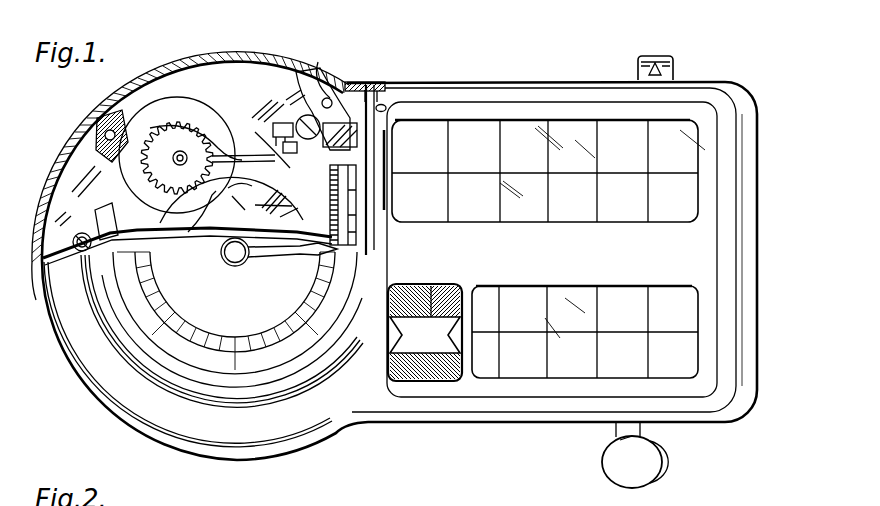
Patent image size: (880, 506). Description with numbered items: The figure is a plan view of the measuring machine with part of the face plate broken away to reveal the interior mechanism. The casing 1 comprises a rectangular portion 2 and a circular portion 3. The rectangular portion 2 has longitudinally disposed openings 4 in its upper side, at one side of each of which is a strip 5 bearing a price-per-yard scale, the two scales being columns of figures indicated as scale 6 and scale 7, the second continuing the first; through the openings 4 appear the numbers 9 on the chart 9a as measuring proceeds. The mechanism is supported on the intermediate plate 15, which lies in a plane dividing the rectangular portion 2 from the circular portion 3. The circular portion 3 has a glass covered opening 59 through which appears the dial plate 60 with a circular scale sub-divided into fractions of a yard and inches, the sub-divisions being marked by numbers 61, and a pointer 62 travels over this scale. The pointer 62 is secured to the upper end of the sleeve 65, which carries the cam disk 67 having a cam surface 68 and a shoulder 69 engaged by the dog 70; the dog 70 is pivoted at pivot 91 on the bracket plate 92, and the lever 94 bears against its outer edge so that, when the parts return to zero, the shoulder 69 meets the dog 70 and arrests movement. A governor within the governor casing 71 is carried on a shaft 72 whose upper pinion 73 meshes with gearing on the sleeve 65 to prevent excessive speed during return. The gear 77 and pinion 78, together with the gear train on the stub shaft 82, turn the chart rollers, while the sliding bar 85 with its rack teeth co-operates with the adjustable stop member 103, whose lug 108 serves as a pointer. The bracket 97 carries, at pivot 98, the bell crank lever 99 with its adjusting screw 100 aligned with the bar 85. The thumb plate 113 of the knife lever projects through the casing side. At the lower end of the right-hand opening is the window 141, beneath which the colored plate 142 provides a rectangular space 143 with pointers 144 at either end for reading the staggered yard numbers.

The casing 1 is at (354, 420).
The rectangular portion 2 is at (546, 422).
The circular portion 3 is at (213, 448).
The openings 4 is at (690, 192).
The strip 5 is at (474, 140).
The price-per-yard scale 6 is at (574, 140).
The price-per-yard scale 7 is at (625, 290).
The numbers 9 is at (672, 210).
The chart 9a is at (523, 187).
The intermediate plate 15 is at (386, 106).
The glass covered opening 59 is at (150, 358).
The dial plate 60 is at (263, 373).
The numbers 61 is at (222, 327).
The pointer 62 is at (250, 257).
The sleeve 65 is at (187, 215).
The cam disk 67 is at (231, 204).
The cam surface 68 is at (242, 196).
The shoulder 69 is at (276, 217).
The dog 70 is at (272, 152).
The governor casing 71 is at (197, 112).
The shaft 72 is at (177, 158).
The pinion 73 is at (198, 150).
The gear 77 is at (358, 225).
The pinion 78 is at (302, 246).
The stub shaft 82 is at (360, 215).
The bar 85 is at (320, 74).
The pivot 91 is at (292, 64).
The bracket plate 92 is at (346, 90).
The lever 94 is at (274, 202).
The bracket 97 is at (261, 107).
The pivot 98 is at (290, 94).
The bell crank lever 99 is at (280, 146).
The adjusting screw 100 is at (100, 112).
The adjustable stop member 103 is at (672, 56).
The lug 108 is at (640, 72).
The thumb plate 113 is at (656, 477).
The window 141 is at (441, 380).
The colored plate 142 is at (445, 284).
The rectangular space 143 is at (432, 292).
The pointers 144 is at (398, 340).